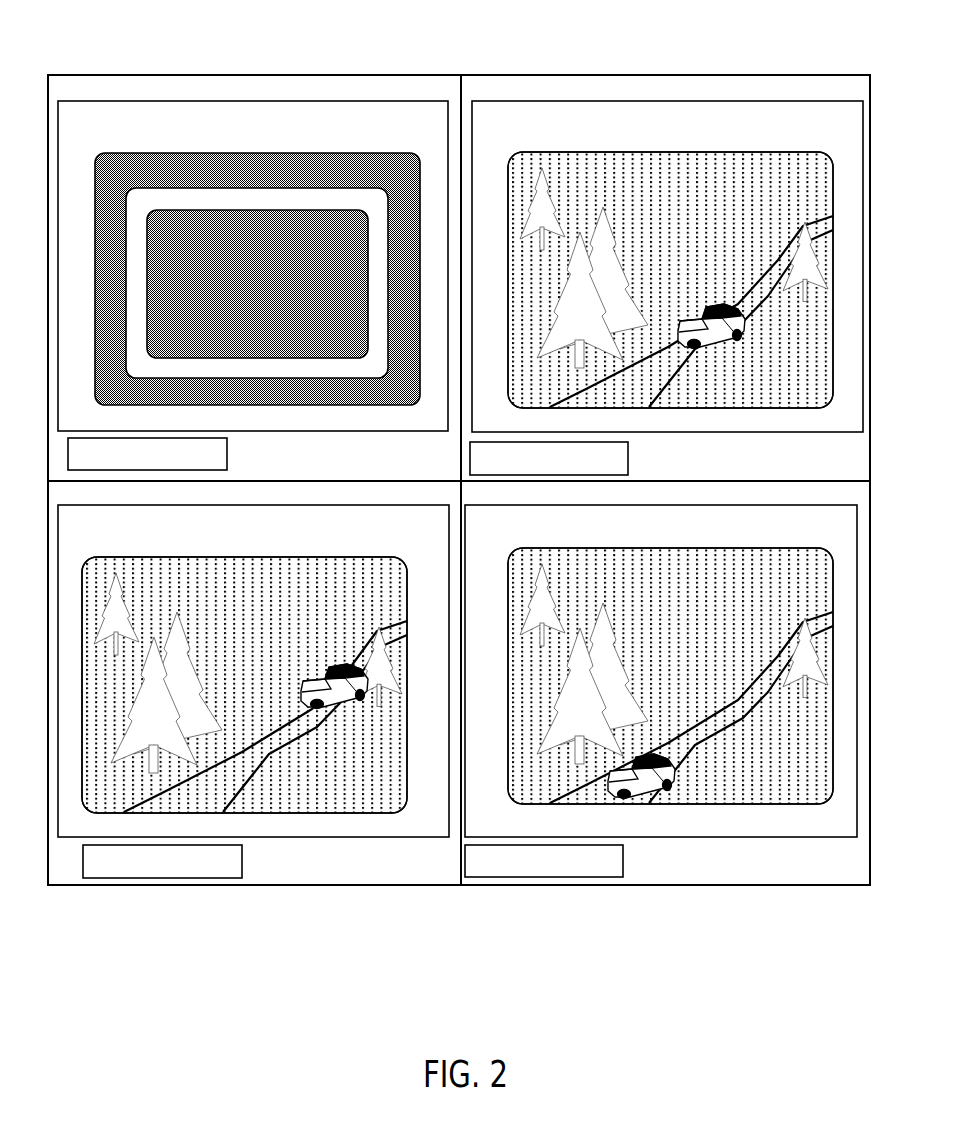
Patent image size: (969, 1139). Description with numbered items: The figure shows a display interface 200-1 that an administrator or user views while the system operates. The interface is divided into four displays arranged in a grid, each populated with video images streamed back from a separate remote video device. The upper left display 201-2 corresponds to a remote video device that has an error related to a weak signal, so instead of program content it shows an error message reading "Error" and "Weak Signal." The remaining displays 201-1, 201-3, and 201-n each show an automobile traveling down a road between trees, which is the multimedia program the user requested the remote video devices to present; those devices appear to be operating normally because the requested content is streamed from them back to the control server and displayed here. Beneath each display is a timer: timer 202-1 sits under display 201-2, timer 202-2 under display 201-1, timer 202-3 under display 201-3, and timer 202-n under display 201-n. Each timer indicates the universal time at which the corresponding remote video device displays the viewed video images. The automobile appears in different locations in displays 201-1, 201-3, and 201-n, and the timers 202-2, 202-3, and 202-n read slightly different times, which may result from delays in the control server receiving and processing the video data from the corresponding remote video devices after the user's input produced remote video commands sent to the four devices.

The display interface 200-1 is at (468, 23).
The display 201-1 is at (726, 151).
The display 201-2 is at (314, 151).
The display 201-3 is at (313, 556).
The display 201-n is at (713, 547).
The timer 202-1 is at (231, 447).
The timer 202-2 is at (633, 457).
The timer 202-3 is at (244, 855).
The timer 202-n is at (626, 857).